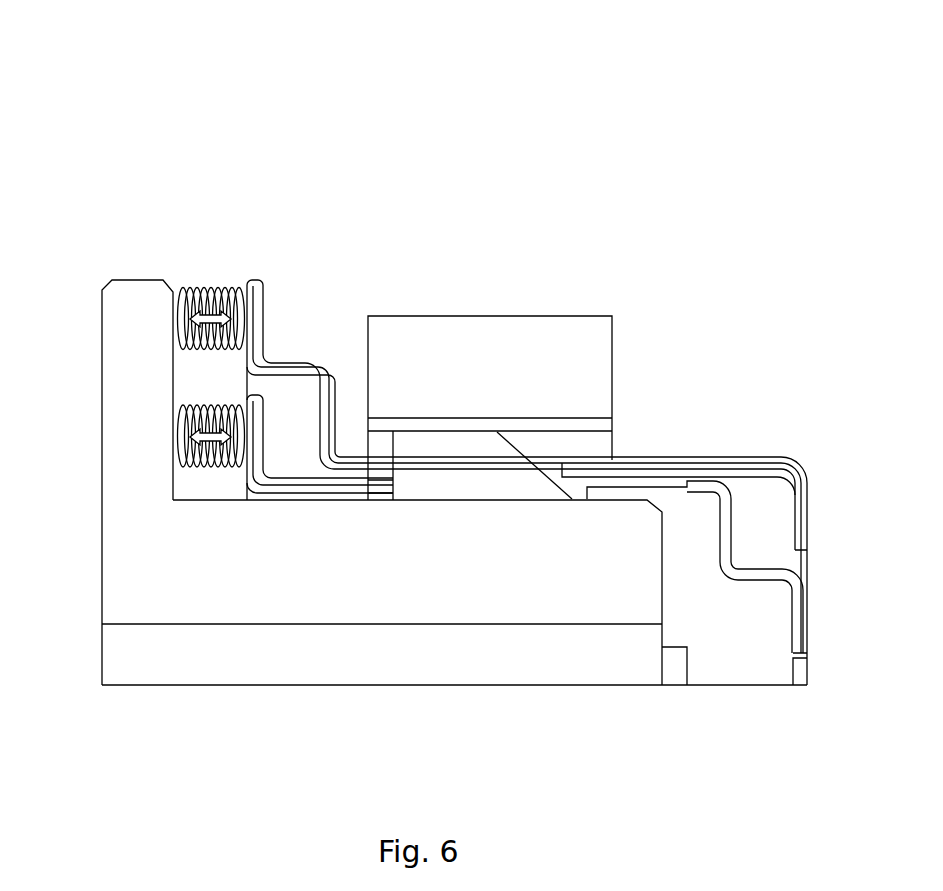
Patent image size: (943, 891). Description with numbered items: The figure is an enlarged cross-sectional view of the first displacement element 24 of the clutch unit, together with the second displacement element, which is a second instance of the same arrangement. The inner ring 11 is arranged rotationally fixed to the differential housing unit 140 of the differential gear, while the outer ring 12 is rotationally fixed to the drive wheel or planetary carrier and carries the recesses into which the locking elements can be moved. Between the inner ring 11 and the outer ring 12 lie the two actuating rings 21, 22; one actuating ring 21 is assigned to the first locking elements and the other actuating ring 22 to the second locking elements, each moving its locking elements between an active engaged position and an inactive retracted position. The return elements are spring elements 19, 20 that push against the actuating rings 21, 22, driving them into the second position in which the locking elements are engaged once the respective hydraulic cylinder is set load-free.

The first displacement element 24 is at (183, 98).
The inner ring 11 is at (192, 613).
The differential housing unit 140 is at (352, 673).
The actuating ring 21 is at (733, 665).
The spring element 20 is at (173, 318).
The spring element 19 is at (173, 443).
The outer ring 12 is at (567, 332).
The actuating ring 22 is at (778, 460).